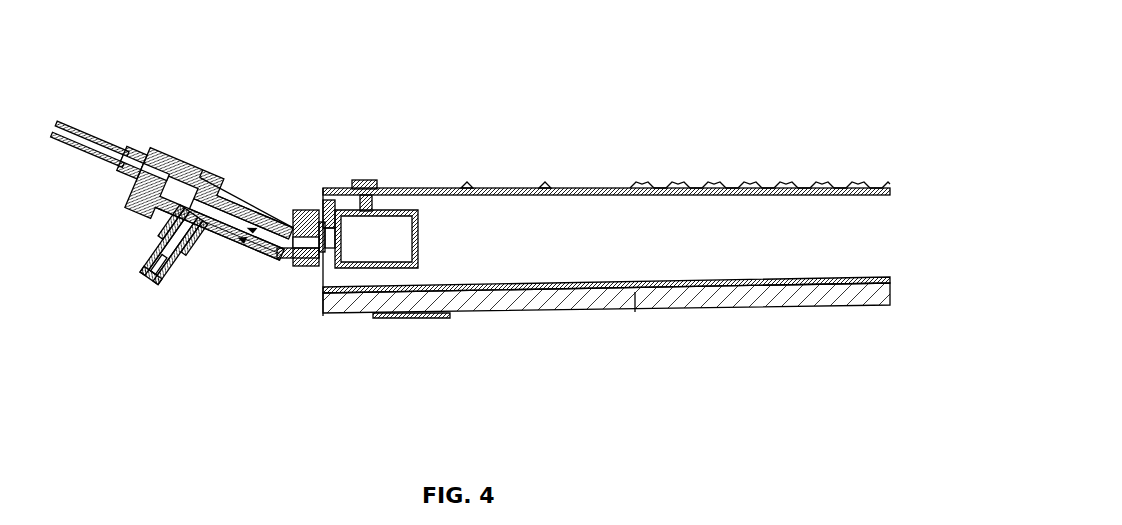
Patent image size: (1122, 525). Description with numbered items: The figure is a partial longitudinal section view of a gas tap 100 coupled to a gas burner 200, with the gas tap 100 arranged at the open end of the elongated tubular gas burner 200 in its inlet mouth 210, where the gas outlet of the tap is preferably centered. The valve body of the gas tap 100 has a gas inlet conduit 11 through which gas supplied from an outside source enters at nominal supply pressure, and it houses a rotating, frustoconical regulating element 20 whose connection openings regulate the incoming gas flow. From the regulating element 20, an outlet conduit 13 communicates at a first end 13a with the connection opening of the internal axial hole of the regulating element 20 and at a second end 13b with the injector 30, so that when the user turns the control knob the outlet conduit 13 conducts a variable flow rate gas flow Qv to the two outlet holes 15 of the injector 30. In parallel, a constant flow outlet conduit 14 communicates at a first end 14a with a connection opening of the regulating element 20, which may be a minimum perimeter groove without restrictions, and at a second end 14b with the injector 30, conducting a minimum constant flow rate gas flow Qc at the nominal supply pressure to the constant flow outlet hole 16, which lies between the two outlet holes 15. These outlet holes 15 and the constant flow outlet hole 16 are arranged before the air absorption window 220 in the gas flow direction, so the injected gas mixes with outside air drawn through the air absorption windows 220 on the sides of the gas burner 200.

The gas tap 100 is at (156, 76).
The gas burner 200 is at (658, 152).
The inlet mouth 210 is at (323, 222).
The air absorption window 220 is at (388, 258).
The regulating element 20 is at (164, 200).
The gas inlet conduit 11 is at (158, 252).
The outlet conduit 13 is at (216, 225).
The first end 13a is at (170, 270).
The second end 13b is at (314, 262).
The constant flow outlet conduit 14 is at (238, 198).
The first end 14a is at (207, 190).
The second end 14b is at (344, 222).
The outlet hole 15 is at (340, 222).
The constant flow outlet hole 16 is at (340, 238).
The injector 30 is at (303, 212).
The minimum constant flow rate gas flow Qc is at (260, 214).
The variable flow rate gas flow Qv is at (247, 246).